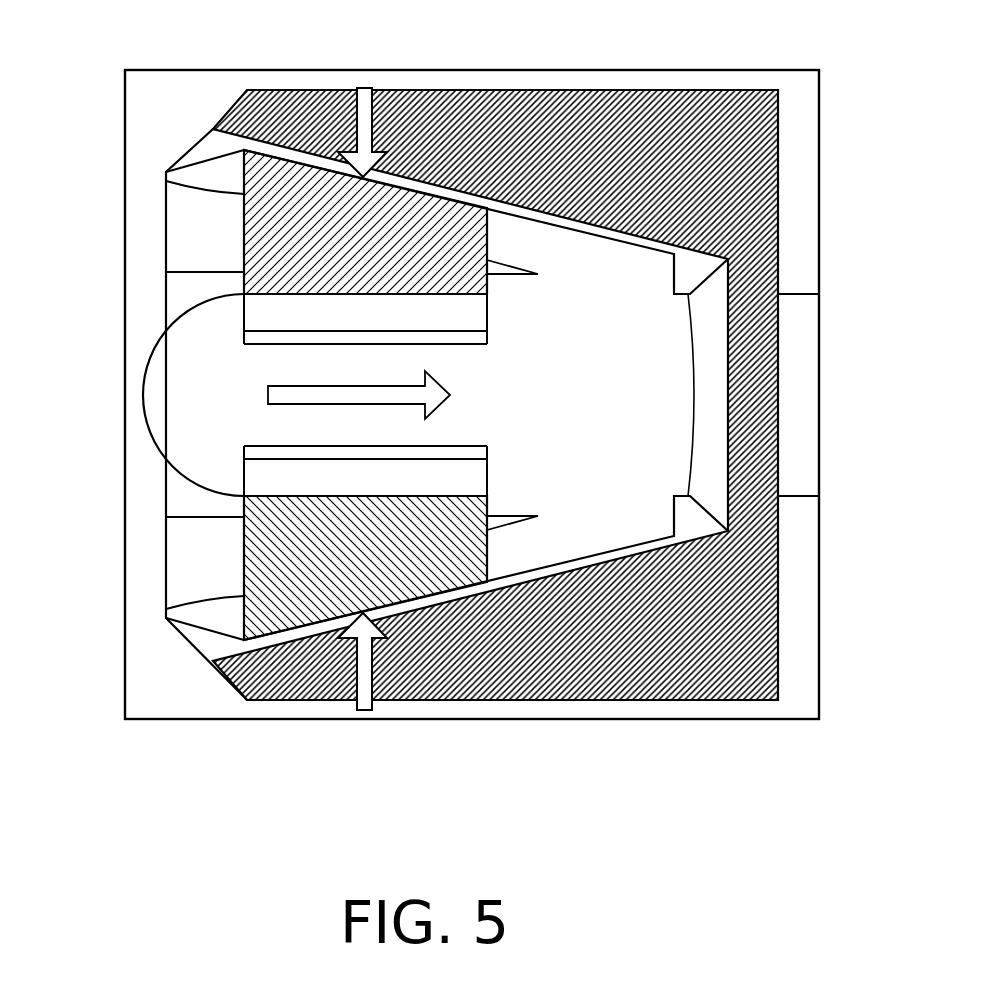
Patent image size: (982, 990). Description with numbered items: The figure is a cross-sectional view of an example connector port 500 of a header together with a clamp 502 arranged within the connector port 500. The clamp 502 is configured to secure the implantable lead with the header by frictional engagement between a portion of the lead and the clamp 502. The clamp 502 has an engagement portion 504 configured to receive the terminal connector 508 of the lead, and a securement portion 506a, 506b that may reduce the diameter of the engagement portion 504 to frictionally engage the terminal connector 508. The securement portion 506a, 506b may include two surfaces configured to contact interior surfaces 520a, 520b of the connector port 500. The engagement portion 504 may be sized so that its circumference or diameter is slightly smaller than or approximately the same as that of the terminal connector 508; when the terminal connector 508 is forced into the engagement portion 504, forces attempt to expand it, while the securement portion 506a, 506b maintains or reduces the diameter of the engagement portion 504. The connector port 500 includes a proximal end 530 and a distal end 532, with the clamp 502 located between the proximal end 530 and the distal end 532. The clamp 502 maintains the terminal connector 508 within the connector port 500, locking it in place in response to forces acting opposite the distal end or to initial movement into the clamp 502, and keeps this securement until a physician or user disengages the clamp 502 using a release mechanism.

The connector port 500 is at (264, 100).
The clamp 502 is at (304, 531).
The engagement portion 504 is at (688, 492).
The securement portion 506a is at (264, 180).
The securement portion 506b is at (250, 592).
The terminal connector 508 is at (174, 366).
The interior surface 520a is at (471, 188).
The interior surface 520b is at (530, 586).
The proximal end 530 is at (778, 289).
The distal end 532 is at (163, 272).